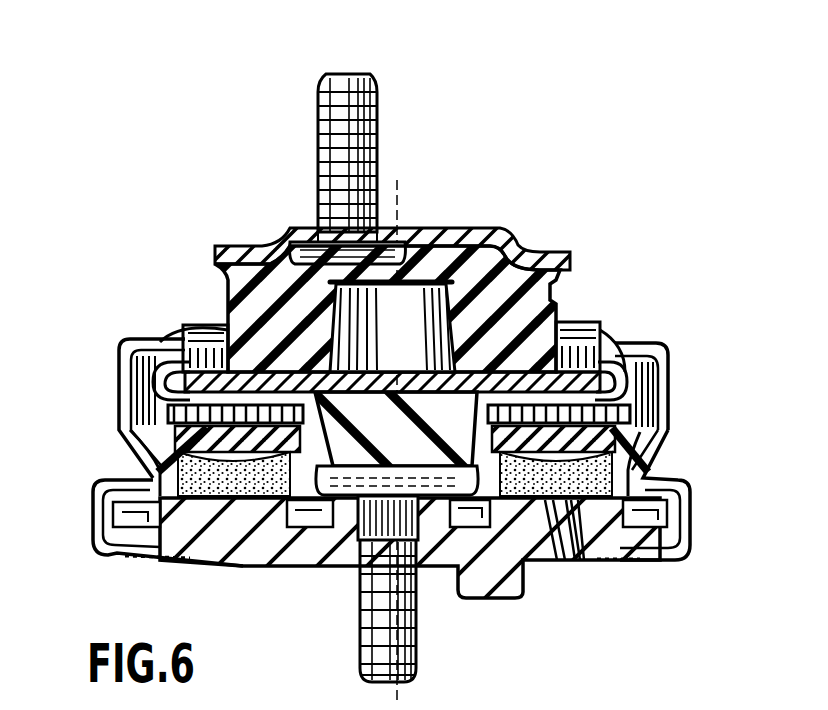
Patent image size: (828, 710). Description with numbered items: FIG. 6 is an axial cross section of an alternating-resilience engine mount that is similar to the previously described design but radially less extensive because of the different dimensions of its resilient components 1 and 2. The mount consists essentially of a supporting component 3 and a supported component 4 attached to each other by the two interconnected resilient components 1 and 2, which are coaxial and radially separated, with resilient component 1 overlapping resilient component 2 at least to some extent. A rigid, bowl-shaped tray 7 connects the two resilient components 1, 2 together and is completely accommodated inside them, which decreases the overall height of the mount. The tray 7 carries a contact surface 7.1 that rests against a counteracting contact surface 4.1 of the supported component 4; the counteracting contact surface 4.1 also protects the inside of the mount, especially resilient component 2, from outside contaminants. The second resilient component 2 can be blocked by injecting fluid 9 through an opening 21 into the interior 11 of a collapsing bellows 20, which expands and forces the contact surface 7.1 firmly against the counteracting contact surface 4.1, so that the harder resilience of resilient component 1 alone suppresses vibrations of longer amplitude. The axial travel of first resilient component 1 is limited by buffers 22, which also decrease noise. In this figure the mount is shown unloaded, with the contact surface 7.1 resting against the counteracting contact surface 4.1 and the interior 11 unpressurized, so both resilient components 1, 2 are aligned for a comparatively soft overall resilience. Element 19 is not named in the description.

The resilient component 1 is at (540, 292).
The resilient component 2 is at (386, 431).
The supporting component 3 is at (502, 236).
The supported component 4 is at (288, 560).
The counteracting contact surface 4.1 is at (161, 338).
The tray 7 is at (140, 390).
The contact surface 7.1 is at (608, 342).
The fluid 9 is at (633, 479).
The interior 11 is at (137, 475).
The rubber ring 19 is at (665, 392).
The collapsing bellows 20 is at (623, 467).
The opening 21 is at (568, 565).
The buffers 22 is at (399, 212).